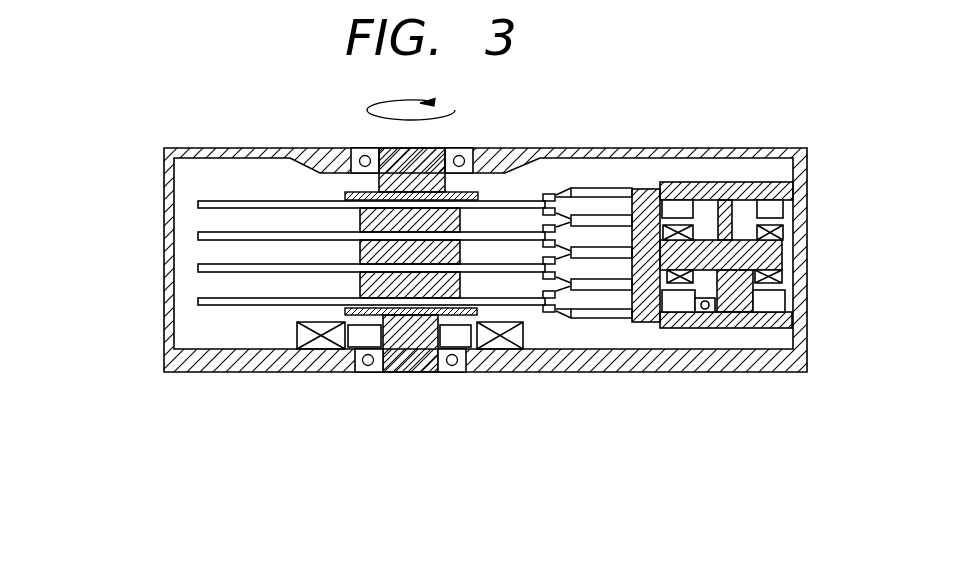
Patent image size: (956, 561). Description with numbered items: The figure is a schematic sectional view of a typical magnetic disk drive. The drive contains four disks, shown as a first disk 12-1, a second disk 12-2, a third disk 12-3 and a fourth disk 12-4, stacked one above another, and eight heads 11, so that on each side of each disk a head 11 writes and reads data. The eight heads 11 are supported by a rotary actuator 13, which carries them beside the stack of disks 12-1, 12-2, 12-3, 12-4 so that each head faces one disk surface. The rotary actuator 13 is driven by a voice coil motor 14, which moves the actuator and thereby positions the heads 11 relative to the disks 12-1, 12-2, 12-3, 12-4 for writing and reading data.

The head 11 is at (552, 194).
The disk 12-1 is at (198, 204).
The disk 12-2 is at (198, 236).
The disk 12-3 is at (198, 268).
The disk 12-4 is at (198, 301).
The rotary actuator 13 is at (645, 322).
The voice coil motor 14 is at (765, 290).